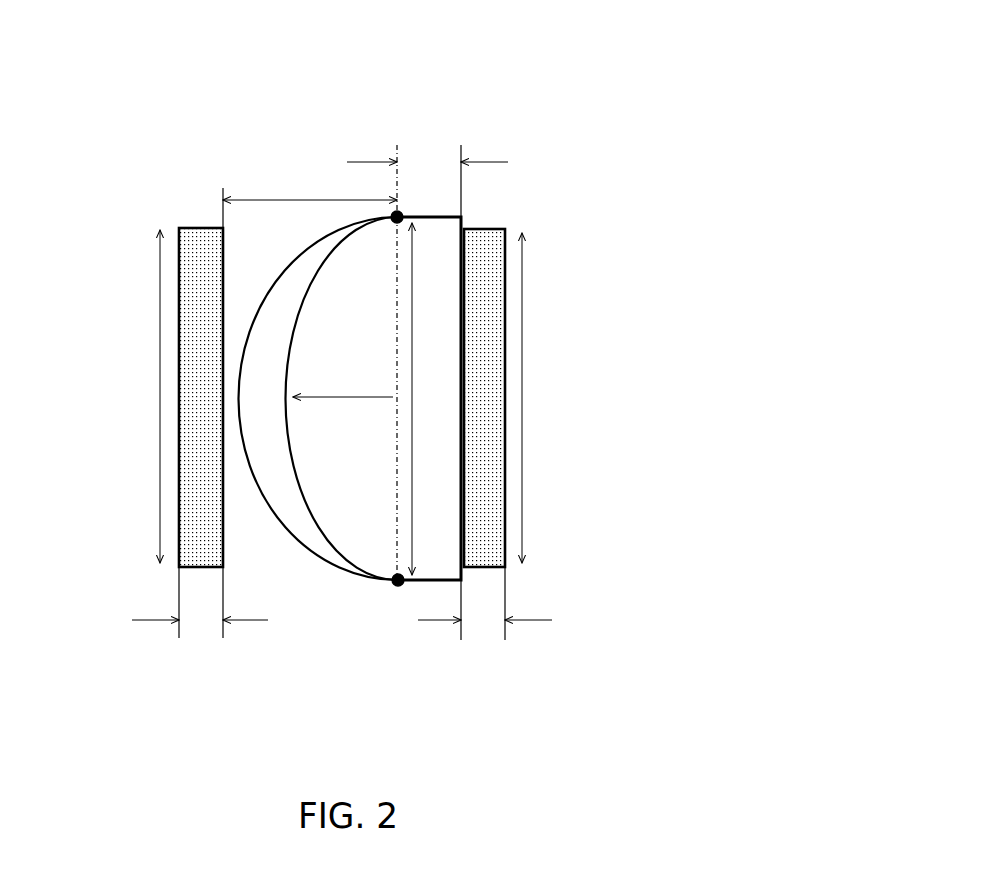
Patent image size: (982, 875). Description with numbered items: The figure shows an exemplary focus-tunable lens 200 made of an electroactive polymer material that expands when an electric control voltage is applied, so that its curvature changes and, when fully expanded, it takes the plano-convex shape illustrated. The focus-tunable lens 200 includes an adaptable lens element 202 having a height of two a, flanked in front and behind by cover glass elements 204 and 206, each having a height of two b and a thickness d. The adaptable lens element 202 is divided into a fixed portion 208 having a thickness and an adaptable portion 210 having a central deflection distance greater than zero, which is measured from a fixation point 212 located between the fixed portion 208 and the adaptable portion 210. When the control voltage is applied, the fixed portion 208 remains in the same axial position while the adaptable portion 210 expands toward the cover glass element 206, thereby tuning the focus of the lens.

The focus-tunable lens 200 is at (537, 97).
The adaptable lens element 202 is at (435, 398).
The cover glass element 204 is at (550, 382).
The cover glass element 206 is at (140, 364).
The fixed portion 208 is at (427, 362).
The adaptable portion 210 is at (310, 199).
The fixation point 212 is at (362, 637).